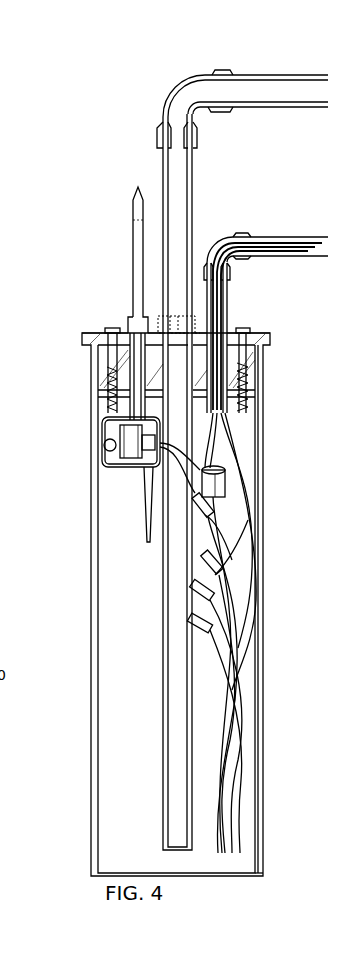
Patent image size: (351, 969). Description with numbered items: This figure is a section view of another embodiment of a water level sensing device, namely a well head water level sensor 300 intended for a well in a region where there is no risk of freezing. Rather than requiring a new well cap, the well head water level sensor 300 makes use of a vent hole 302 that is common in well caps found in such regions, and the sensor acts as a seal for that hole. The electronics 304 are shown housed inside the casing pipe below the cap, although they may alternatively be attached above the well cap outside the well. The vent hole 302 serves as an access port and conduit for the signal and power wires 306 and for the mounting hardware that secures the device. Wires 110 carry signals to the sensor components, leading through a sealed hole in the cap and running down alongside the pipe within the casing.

The well head water level sensor 300 is at (66, 430).
The vent hole 302 is at (127, 330).
The electronics 304 is at (106, 465).
The signal and power wires 306 is at (221, 440).
The wires 110 is at (220, 710).